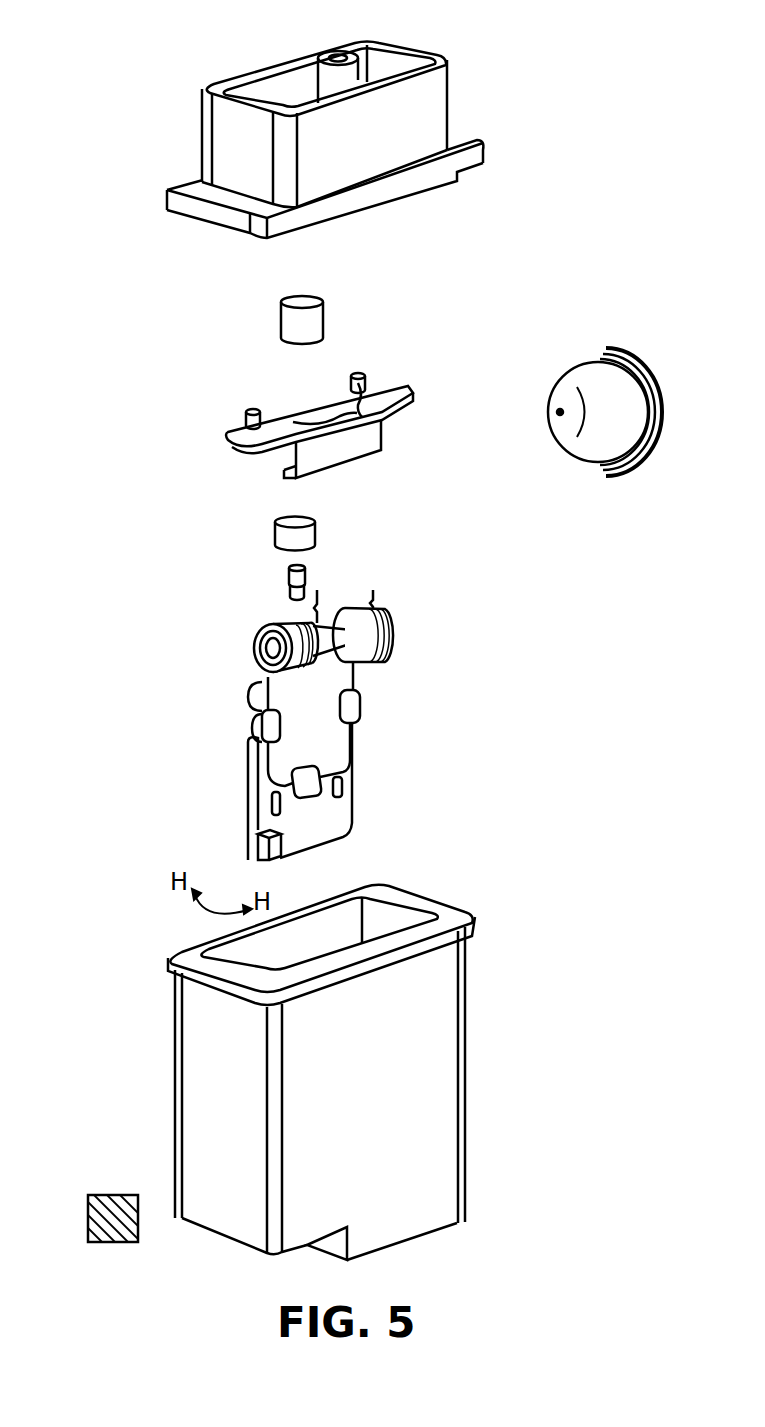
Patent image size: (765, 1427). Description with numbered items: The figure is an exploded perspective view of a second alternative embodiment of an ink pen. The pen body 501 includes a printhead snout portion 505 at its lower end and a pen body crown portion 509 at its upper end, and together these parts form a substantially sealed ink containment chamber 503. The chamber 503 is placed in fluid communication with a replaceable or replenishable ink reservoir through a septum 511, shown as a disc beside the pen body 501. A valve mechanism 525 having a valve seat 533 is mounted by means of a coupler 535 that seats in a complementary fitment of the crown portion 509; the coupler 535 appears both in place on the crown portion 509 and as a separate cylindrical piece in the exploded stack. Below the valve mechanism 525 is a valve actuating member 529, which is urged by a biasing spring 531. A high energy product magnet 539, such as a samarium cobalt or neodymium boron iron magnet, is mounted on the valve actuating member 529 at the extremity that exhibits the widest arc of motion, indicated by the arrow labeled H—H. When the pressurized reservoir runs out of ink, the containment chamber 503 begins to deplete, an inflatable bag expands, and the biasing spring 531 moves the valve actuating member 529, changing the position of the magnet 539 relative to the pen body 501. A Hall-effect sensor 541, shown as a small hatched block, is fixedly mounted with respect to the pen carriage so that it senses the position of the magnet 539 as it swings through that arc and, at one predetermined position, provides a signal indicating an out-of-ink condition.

The pen body 501 is at (488, 1075).
The ink containment chamber 503 is at (397, 919).
The printhead snout portion 505 is at (413, 1208).
The pen body crown portion 509 is at (168, 197).
The septum 511 is at (660, 395).
The valve mechanism 525 is at (230, 427).
The valve actuating member 529 is at (343, 813).
The biasing spring 531 is at (393, 628).
The valve seat 533 is at (275, 538).
The coupler 535 is at (330, 57).
The magnet 539 is at (260, 855).
The Hall-effect sensor 541 is at (107, 1195).